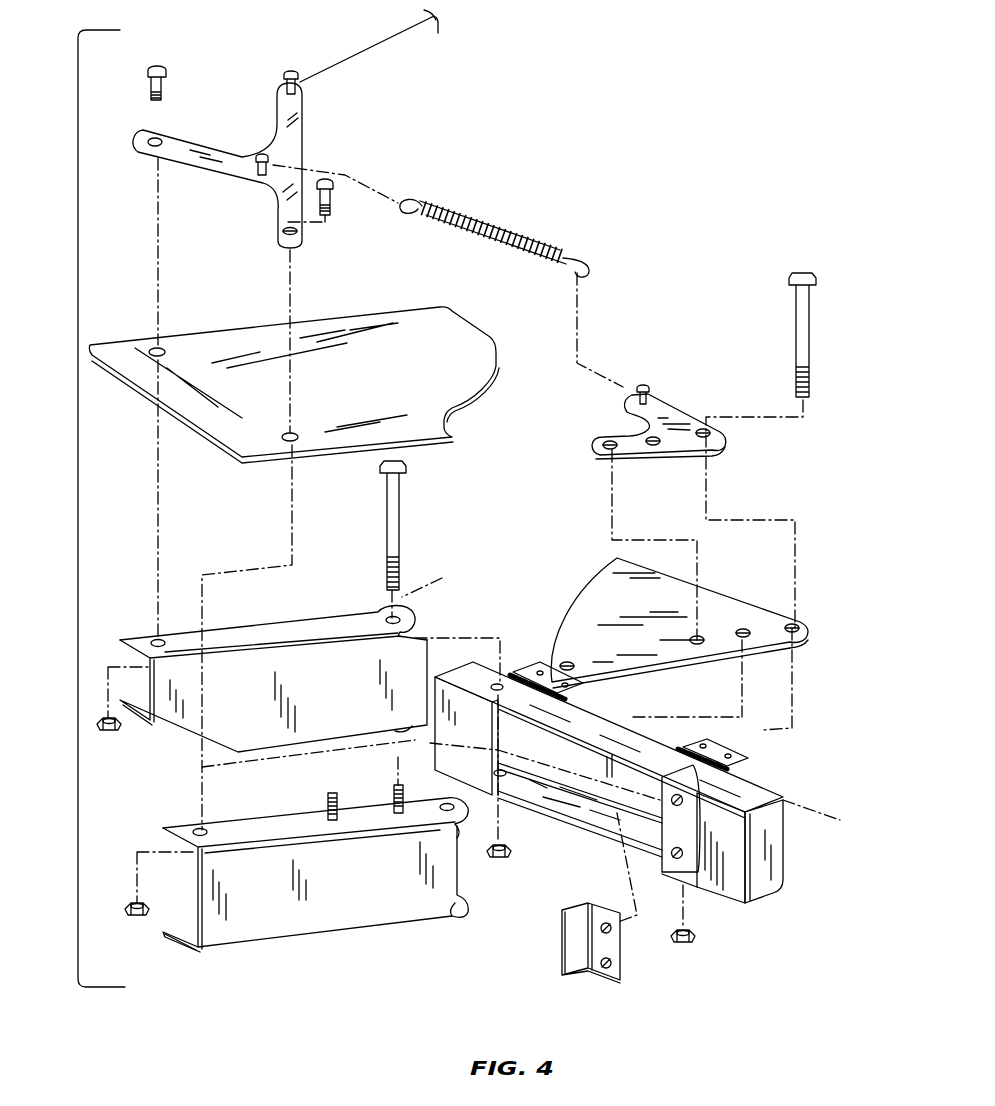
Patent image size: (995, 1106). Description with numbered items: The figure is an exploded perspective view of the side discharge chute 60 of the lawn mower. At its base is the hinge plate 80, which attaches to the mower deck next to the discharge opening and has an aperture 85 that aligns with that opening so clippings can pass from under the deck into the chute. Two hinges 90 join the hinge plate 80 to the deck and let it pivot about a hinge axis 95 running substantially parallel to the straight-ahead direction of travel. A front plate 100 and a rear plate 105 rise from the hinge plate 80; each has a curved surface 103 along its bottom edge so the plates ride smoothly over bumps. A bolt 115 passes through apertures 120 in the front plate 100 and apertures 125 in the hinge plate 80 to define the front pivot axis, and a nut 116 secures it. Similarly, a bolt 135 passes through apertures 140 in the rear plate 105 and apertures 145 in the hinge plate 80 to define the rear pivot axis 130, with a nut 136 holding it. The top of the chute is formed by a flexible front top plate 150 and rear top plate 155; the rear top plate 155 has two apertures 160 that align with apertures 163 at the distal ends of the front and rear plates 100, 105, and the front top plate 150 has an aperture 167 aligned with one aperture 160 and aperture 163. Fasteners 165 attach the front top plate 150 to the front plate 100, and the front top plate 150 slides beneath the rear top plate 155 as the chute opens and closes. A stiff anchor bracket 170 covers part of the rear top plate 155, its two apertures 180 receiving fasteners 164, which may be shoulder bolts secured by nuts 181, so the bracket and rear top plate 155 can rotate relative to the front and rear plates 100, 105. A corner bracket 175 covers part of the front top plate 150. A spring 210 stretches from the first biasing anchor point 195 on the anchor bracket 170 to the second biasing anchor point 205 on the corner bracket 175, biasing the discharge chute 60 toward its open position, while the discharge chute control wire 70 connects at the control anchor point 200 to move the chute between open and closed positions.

The discharge chute 60 is at (602, 121).
The discharge chute control wire 70 is at (390, 31).
The hinge plate 80 is at (765, 795).
The aperture 85 is at (602, 811).
The hinge 90 is at (519, 667).
The hinge axis 95 is at (622, 723).
The front plate 100 is at (380, 913).
The curved surface 103 is at (199, 948).
The rear plate 105 is at (283, 628).
The bolt 115 is at (800, 272).
The nut 116 is at (692, 943).
The aperture 120 is at (473, 816).
The aperture 125 is at (692, 767).
The rear pivot axis 130 is at (437, 573).
The bolt 135 is at (398, 547).
The nut 136 is at (508, 858).
The aperture 140 is at (382, 613).
The aperture 145 is at (495, 683).
The front top plate 150 is at (714, 597).
The rear top plate 155 is at (408, 394).
The aperture 160 is at (161, 344).
The aperture 163 is at (156, 640).
The fastener 164 is at (148, 84).
The fastener 165 is at (393, 798).
The aperture 167 is at (568, 661).
The anchor bracket 170 is at (300, 156).
The corner bracket 175 is at (682, 417).
The aperture 180 is at (161, 140).
The nut 181 is at (118, 730).
The first biasing anchor point 195 is at (261, 182).
The control anchor point 200 is at (282, 90).
The second biasing anchor point 205 is at (648, 392).
The spring 210 is at (510, 227).